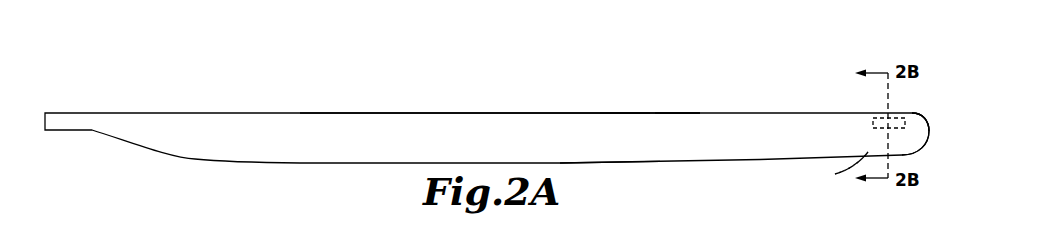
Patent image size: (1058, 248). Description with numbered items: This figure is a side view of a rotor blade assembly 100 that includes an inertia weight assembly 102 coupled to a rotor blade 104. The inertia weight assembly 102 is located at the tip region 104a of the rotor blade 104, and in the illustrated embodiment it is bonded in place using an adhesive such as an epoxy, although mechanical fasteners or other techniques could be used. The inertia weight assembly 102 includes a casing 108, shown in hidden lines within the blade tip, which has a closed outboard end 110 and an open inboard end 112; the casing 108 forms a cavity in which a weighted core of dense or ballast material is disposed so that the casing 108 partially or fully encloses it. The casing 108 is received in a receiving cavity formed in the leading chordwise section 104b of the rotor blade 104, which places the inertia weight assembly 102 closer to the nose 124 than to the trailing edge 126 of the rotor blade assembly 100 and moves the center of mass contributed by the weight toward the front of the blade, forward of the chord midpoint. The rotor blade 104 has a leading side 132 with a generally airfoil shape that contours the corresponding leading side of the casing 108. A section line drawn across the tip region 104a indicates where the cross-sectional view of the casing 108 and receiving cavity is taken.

The rotor blade assembly 100 is at (326, 108).
The inertia weight assembly 102 is at (835, 174).
The rotor blade 104 is at (695, 163).
The tip region 104a is at (920, 156).
The leading chordwise section 104b is at (565, 118).
The casing 108 is at (868, 152).
The closed outboard end 110 is at (930, 111).
The open inboard end 112 is at (872, 122).
The nose 124 is at (622, 113).
The trailing edge 126 is at (607, 165).
The leading side 132 is at (675, 113).